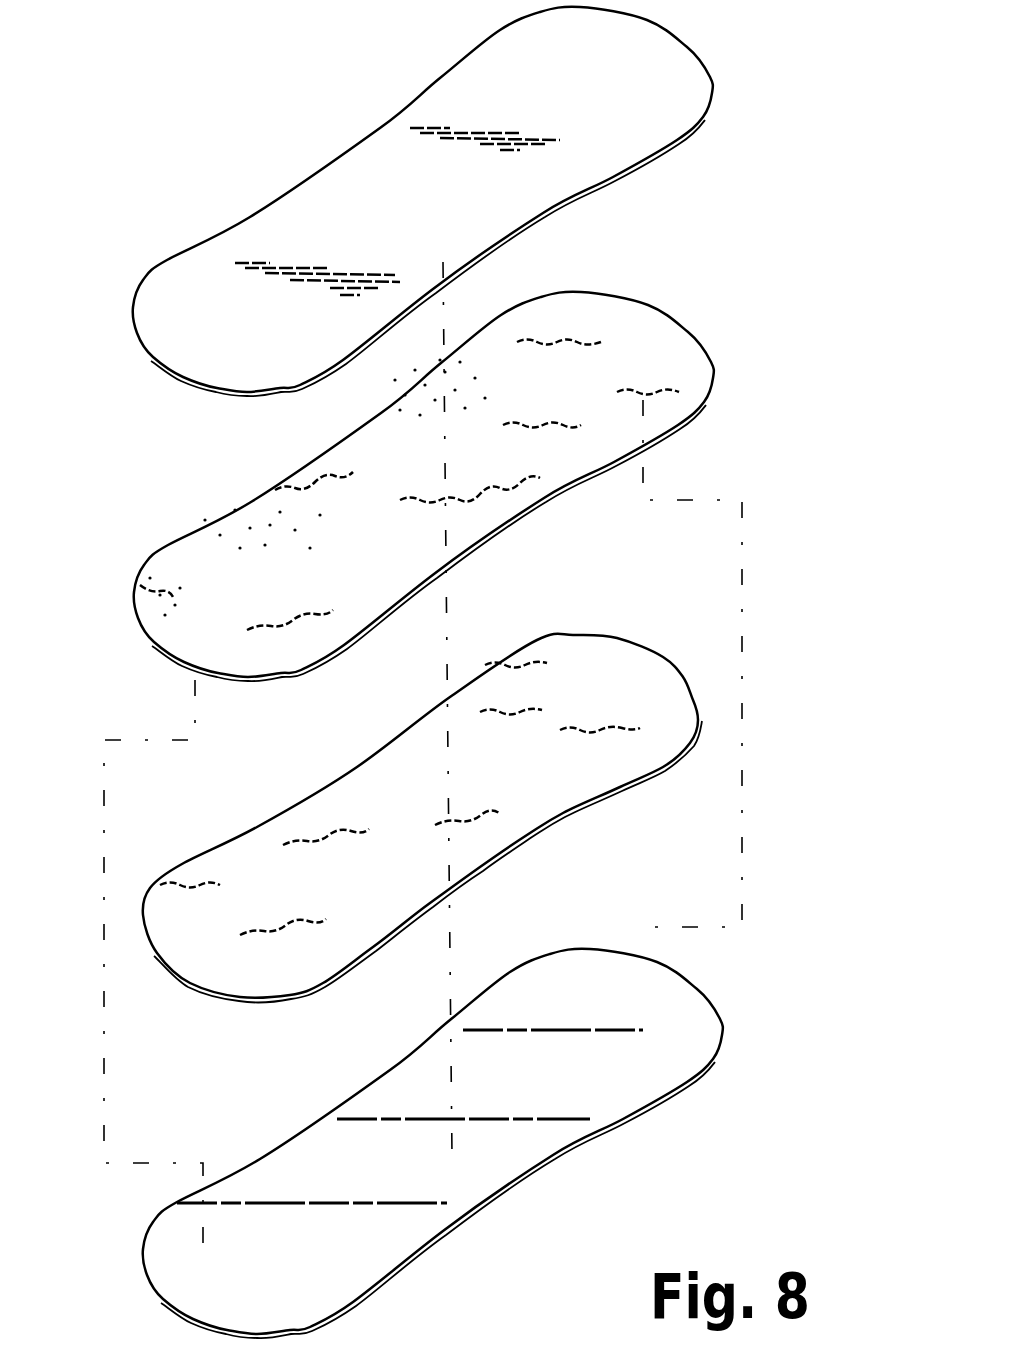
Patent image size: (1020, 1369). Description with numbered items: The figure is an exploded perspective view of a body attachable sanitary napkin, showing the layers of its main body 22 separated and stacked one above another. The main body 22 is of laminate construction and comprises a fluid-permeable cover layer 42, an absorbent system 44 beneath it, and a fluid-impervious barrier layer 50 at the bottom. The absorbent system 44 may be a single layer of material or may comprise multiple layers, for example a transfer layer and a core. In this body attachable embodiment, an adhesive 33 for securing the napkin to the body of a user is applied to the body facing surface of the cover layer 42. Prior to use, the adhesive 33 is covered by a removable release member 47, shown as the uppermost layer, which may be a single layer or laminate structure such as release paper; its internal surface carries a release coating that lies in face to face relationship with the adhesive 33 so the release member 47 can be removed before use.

The main body 22 is at (100, 240).
The release member 47 is at (620, 187).
The fluid-permeable cover layer 42 is at (623, 477).
The adhesive 33 is at (312, 483).
The absorbent system 44 is at (575, 833).
The fluid-impervious barrier layer 50 is at (458, 1250).